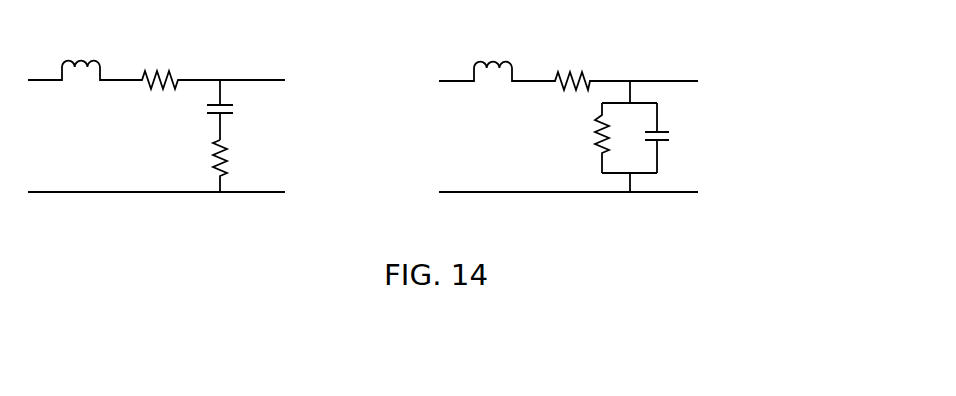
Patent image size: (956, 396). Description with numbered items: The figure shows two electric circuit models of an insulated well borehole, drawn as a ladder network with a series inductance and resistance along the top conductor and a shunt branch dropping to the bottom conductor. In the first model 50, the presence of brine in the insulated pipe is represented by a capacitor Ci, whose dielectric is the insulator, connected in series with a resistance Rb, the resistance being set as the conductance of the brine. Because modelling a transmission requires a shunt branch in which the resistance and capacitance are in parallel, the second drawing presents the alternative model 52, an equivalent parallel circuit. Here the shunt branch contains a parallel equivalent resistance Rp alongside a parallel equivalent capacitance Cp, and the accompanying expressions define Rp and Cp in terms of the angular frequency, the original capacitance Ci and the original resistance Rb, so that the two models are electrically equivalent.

The series circuit model 50 is at (181, 134).
The alternative parallel circuit model 52 is at (601, 134).
The capacitor Ci is at (237, 110).
The resistance Rb is at (199, 166).
The parallel equivalent resistance Rp is at (582, 135).
The parallel equivalent capacitance Cp is at (744, 138).